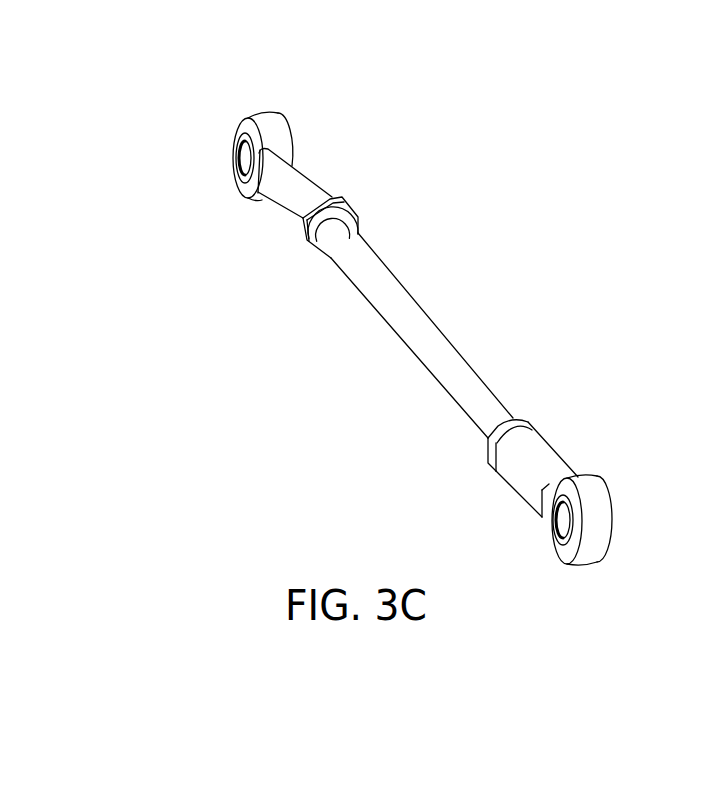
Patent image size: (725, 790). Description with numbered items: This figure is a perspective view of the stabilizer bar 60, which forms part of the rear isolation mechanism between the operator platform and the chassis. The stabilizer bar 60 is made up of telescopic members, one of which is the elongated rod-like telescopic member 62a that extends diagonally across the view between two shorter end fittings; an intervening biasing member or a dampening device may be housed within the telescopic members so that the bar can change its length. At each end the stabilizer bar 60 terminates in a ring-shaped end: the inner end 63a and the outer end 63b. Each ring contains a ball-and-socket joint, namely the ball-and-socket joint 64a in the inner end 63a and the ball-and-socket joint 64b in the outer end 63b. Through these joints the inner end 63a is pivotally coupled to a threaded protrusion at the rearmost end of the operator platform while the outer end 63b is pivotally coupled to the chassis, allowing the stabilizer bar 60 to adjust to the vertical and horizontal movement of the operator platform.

The stabilizer bar 60 is at (529, 214).
The telescopic member 62a is at (399, 330).
The ring-shaped inner end 63a is at (266, 117).
The ring-shaped outer end 63b is at (603, 515).
The ball-and-socket joint 64a is at (240, 160).
The ball-and-socket joint 64b is at (560, 531).